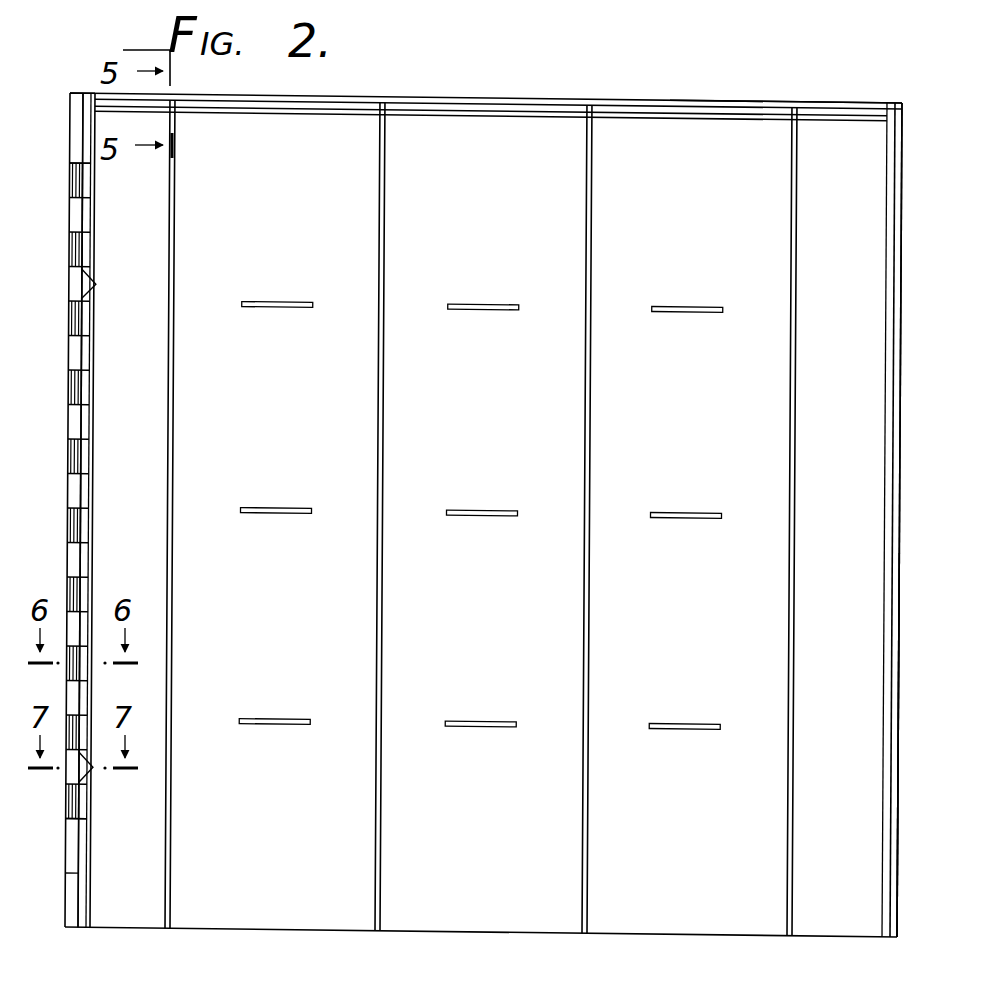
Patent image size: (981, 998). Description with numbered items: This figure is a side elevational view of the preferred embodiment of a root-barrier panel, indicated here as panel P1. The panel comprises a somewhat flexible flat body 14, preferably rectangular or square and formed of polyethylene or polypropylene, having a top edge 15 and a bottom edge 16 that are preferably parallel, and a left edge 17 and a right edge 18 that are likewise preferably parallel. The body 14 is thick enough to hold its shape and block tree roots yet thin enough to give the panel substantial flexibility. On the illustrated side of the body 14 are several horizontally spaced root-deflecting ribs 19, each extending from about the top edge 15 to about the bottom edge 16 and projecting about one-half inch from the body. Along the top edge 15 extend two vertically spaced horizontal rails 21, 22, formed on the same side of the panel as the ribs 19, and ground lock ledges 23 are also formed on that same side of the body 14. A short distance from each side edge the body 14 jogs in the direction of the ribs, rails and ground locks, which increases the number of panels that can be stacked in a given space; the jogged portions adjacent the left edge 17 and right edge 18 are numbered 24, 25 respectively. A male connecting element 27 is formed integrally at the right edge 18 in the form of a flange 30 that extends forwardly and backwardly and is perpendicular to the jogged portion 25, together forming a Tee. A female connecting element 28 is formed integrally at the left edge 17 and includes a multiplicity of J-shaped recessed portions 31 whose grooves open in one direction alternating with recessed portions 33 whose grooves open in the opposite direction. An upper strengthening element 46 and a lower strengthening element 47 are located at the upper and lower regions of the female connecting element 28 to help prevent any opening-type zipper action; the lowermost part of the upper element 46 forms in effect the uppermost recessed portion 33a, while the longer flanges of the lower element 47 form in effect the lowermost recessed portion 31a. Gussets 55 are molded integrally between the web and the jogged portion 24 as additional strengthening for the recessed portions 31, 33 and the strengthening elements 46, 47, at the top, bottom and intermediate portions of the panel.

The flat body 14 is at (490, 459).
The top edge 15 is at (396, 91).
The bottom edge 16 is at (441, 938).
The left edge 17 is at (60, 452).
The right edge 18 is at (907, 572).
The root-deflecting ribs 19 is at (373, 601).
The horizontal rail 21 is at (513, 97).
The horizontal rail 22 is at (510, 120).
The ground lock ledges 23 is at (682, 314).
The jogged body portion 24 is at (88, 880).
The jogged body portion 25 is at (884, 707).
The male connecting element 27 is at (903, 294).
The female connecting element 28 is at (64, 312).
The flange 30 is at (902, 210).
The recessed portion 31 is at (74, 206).
The lowermost recessed portion 31a is at (72, 844).
The recessed portion 33 is at (72, 245).
The uppermost recessed portion 33a is at (70, 173).
The upper strengthening element 46 is at (85, 118).
The lower strengthening element 47 is at (70, 875).
The gussets 55 is at (95, 285).
The panel P1 is at (729, 74).